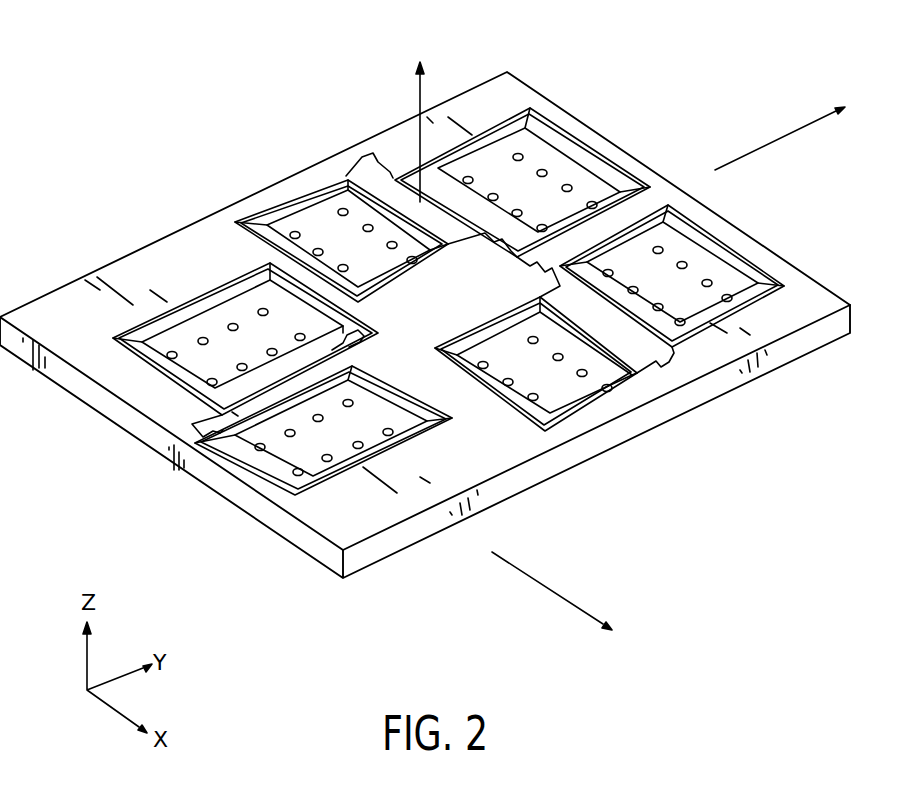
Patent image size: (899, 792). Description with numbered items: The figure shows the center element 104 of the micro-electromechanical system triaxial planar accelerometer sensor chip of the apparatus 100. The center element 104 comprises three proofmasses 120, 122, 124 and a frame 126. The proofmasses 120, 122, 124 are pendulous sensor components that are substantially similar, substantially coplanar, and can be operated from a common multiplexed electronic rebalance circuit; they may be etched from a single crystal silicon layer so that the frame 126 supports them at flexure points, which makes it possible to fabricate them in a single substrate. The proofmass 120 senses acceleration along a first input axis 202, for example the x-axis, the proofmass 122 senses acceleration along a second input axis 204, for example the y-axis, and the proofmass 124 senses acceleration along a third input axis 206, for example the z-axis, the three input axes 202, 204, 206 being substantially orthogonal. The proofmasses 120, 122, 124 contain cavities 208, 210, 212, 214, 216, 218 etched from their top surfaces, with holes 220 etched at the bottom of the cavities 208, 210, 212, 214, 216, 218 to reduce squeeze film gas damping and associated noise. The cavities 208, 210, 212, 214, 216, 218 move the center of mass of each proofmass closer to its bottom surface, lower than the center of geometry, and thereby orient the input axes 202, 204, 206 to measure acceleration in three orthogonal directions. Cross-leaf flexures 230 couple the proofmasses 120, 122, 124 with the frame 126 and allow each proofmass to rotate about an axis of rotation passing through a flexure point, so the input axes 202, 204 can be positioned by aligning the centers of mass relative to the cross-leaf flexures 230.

The imaging system 100 is at (172, 51).
The center element 104 is at (66, 222).
The proofmass 120 is at (235, 418).
The proofmass 122 is at (622, 323).
The proofmass 124 is at (372, 172).
The frame 126 is at (503, 443).
The first input axis 202 is at (538, 585).
The second input axis 204 is at (775, 140).
The third input axis 206 is at (417, 95).
The cavity 208 is at (225, 347).
The cavity 210 is at (290, 453).
The cavity 212 is at (563, 392).
The cavity 214 is at (690, 293).
The cavity 216 is at (500, 170).
The cavity 218 is at (312, 225).
The holes 220 is at (569, 189).
The cross-leaf flexures 230 is at (390, 150).